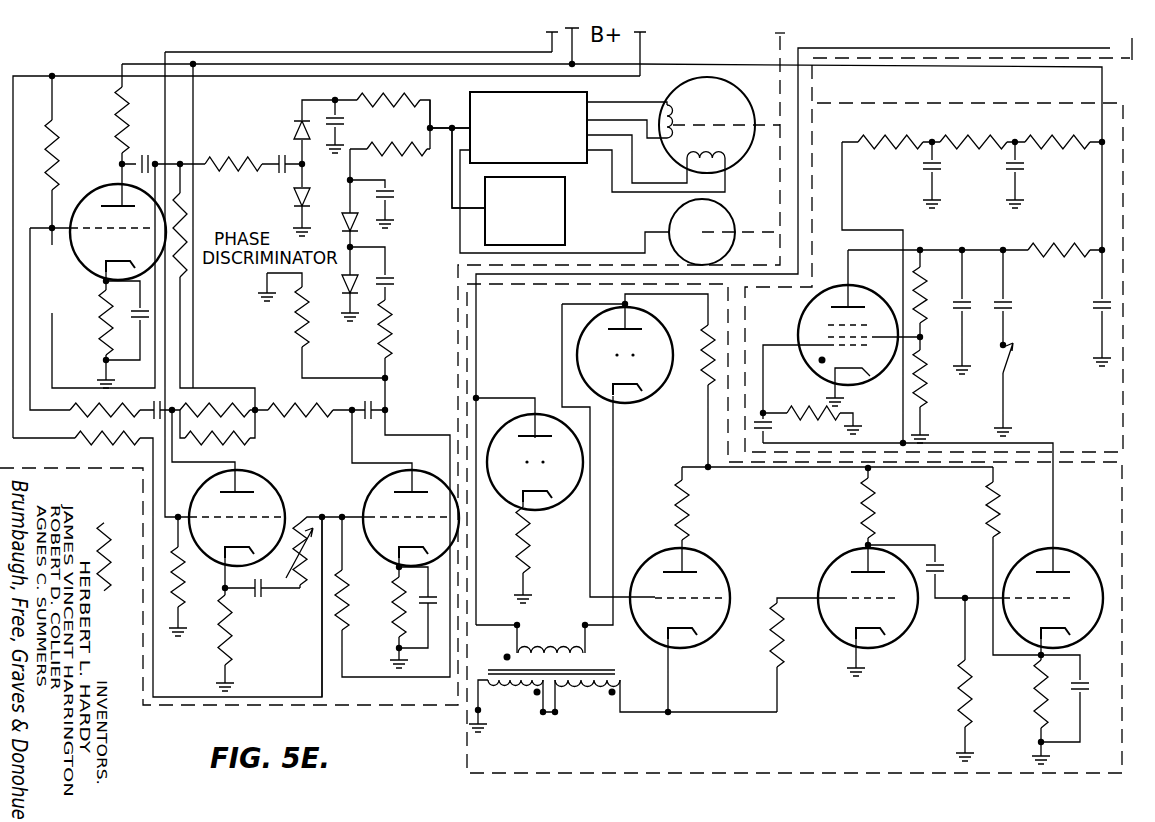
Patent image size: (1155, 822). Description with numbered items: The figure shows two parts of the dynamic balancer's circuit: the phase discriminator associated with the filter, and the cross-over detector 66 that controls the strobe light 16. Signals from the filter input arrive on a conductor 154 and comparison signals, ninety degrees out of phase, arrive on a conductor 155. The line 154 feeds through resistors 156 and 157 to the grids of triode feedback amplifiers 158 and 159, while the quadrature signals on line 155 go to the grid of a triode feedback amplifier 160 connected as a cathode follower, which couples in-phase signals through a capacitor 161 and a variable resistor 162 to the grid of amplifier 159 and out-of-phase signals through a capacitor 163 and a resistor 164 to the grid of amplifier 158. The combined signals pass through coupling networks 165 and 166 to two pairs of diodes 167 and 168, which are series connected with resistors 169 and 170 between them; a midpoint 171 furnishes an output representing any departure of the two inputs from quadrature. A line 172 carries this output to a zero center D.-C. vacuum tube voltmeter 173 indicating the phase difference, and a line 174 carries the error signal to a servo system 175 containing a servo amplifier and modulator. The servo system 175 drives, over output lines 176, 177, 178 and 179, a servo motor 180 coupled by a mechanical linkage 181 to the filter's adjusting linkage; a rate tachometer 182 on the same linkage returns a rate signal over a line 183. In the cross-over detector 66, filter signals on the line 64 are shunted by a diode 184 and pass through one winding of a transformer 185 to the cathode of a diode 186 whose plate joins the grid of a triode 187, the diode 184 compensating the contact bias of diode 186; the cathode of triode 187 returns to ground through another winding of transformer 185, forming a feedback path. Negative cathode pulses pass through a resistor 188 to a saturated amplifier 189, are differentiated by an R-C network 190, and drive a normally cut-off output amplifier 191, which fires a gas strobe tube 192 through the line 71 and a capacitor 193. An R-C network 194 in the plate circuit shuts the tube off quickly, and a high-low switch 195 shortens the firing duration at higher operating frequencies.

The strobe light 16 is at (1120, 122).
The line 64 is at (1110, 48).
The cross-over detector 66 is at (588, 776).
The line 71 is at (972, 446).
The conductor 154 is at (640, 50).
The conductor 155 is at (550, 38).
The resistor 156 is at (73, 155).
The resistor 157 is at (120, 448).
The triode feedback amplifier 158 is at (93, 200).
The triode feedback amplifier 159 is at (372, 500).
The triode feedback amplifier 160 is at (196, 500).
The capacitor 161 is at (262, 598).
The variable resistor 162 is at (300, 526).
The capacitor 163 is at (157, 418).
The resistor 164 is at (90, 420).
The coupling network 165 is at (247, 196).
The coupling network 166 is at (434, 341).
The pair of diodes 167 is at (344, 176).
The pair of diodes 168 is at (398, 252).
The resistor 169 is at (400, 98).
The resistor 170 is at (404, 160).
The midpoint 171 is at (428, 128).
The line 172 is at (450, 208).
The zero center D.-C. vacuum tube voltmeter 173 is at (565, 244).
The line 174 is at (460, 128).
The servo system 175 is at (580, 170).
The output line 176 is at (618, 100).
The output line 177 is at (648, 127).
The output line 178 is at (668, 150).
The output line 179 is at (643, 192).
The servo motor 180 is at (760, 102).
The mechanical linkage 181 is at (776, 48).
The rate tachometer 182 is at (725, 212).
The line 183 is at (458, 242).
The diode 184 is at (505, 436).
The transformer 185 is at (504, 652).
The diode 186 is at (630, 396).
The triode 187 is at (640, 628).
The resistor 188 is at (775, 646).
The amplifier 189 is at (832, 570).
The R-C network 190 is at (958, 628).
The output amplifier 191 is at (1020, 568).
The gas strobe tube 192 is at (812, 310).
The capacitor 193 is at (772, 430).
The R-C network 194 is at (997, 298).
The high-low switch 195 is at (1052, 378).